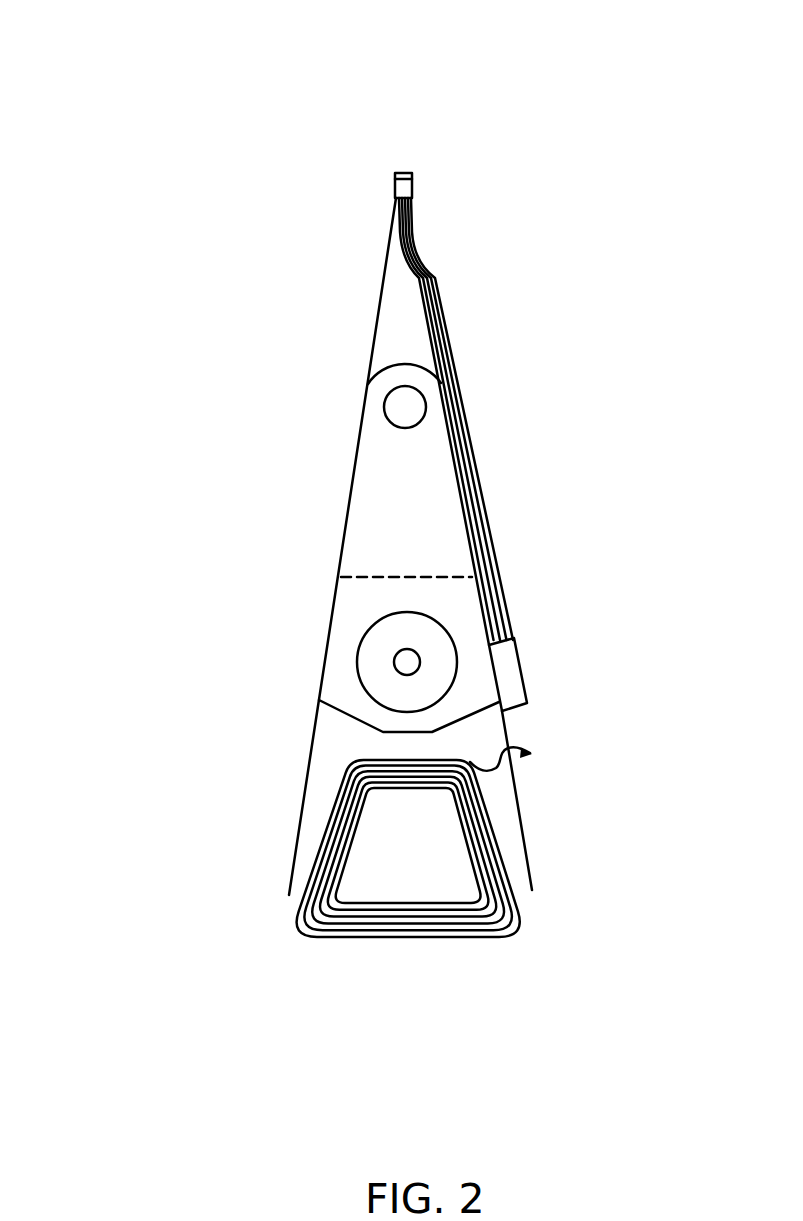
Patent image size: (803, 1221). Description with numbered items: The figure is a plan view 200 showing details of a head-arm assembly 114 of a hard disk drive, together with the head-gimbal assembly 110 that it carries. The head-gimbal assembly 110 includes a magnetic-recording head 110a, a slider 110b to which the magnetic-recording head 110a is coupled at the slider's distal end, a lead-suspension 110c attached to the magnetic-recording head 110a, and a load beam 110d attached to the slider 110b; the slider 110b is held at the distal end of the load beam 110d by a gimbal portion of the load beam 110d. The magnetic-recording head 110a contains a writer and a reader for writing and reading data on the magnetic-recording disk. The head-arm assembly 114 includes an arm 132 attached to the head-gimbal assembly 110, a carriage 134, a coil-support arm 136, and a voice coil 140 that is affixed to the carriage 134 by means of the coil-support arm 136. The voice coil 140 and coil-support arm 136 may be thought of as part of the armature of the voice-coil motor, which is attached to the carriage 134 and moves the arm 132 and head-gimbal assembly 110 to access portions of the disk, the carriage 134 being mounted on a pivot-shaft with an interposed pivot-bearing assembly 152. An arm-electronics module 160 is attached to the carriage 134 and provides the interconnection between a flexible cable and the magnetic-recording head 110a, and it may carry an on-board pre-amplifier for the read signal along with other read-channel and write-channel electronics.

The plan view 200 is at (126, 86).
The head-arm assembly 114 is at (281, 274).
The head-gimbal assembly 110 is at (615, 203).
The magnetic-recording head 110a is at (410, 178).
The slider 110b is at (406, 191).
The lead-suspension 110c is at (434, 287).
The load beam 110d is at (407, 315).
The arm 132 is at (412, 500).
The carriage 134 is at (350, 611).
The pivot-bearing assembly 152 is at (378, 662).
The coil-support arm 136 is at (332, 763).
The arm-electronics module 160 is at (504, 668).
The voice coil 140 is at (502, 857).